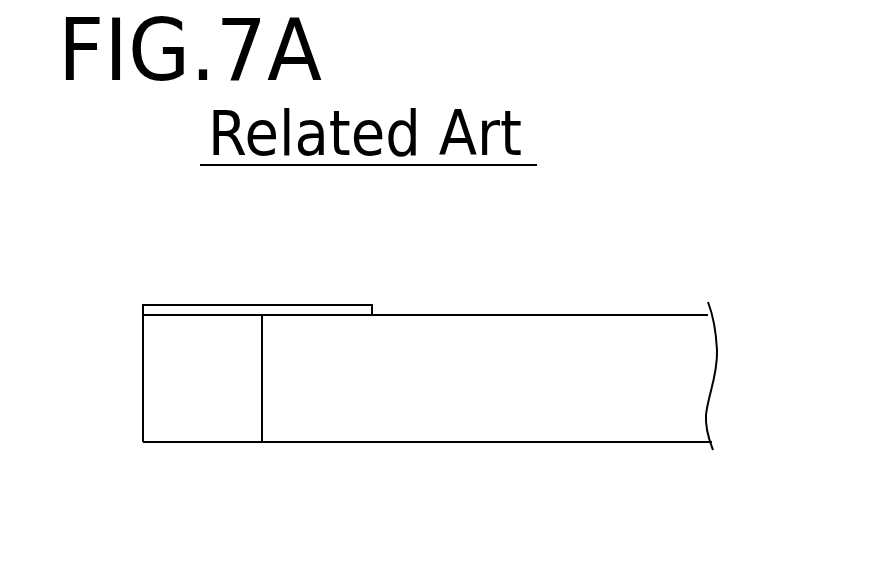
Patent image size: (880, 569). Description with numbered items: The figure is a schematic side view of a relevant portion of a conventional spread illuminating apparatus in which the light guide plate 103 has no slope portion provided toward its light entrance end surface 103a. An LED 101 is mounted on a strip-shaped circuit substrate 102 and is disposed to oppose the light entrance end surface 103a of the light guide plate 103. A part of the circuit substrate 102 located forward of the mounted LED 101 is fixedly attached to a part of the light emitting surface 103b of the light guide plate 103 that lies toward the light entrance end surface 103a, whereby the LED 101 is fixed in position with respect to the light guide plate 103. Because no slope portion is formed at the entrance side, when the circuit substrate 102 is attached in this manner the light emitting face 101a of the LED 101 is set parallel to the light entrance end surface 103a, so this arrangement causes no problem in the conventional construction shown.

The LED 101 is at (217, 420).
The light emitting face 101a is at (262, 407).
The circuit substrate 102 is at (317, 307).
The light guide plate 103 is at (572, 330).
The light entrance end surface 103a is at (260, 340).
The light emitting surface 103b is at (440, 315).